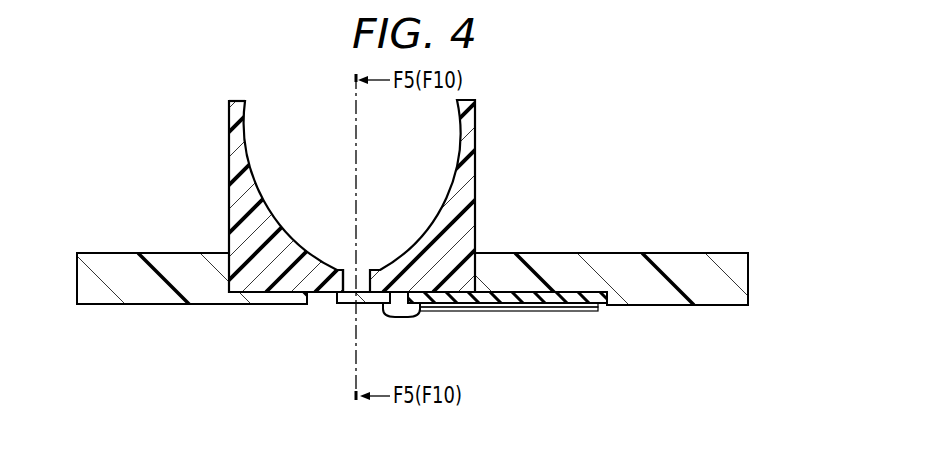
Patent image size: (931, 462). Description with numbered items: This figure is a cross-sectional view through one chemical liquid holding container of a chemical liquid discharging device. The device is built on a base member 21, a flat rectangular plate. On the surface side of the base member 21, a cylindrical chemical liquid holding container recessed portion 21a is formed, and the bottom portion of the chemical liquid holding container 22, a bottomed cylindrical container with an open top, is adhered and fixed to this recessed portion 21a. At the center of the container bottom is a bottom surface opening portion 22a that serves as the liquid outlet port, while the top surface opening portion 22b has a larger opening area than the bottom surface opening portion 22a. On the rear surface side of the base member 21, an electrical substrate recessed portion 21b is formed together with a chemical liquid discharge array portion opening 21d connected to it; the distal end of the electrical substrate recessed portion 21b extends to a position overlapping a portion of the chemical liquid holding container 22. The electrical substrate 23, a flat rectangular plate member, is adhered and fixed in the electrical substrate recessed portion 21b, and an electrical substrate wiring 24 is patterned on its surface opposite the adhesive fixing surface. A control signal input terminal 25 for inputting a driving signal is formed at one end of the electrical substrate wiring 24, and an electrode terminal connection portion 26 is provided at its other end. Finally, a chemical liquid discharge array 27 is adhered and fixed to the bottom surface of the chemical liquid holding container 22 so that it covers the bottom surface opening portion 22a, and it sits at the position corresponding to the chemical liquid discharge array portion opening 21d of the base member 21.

The base member 21 is at (100, 270).
The chemical liquid holding container recessed portion 21a is at (240, 276).
The electrical substrate recessed portion 21b is at (588, 311).
The chemical liquid discharge array portion opening 21d is at (323, 306).
The chemical liquid holding container 22 is at (243, 160).
The bottom surface opening portion 22a is at (345, 268).
The top surface opening portion 22b is at (250, 131).
The electrical substrate 23 is at (560, 300).
The electrical substrate wiring 24 is at (507, 312).
The control signal input terminal 25 is at (545, 312).
The electrode terminal connection portion 26 is at (427, 309).
The chemical liquid discharge array 27 is at (345, 306).